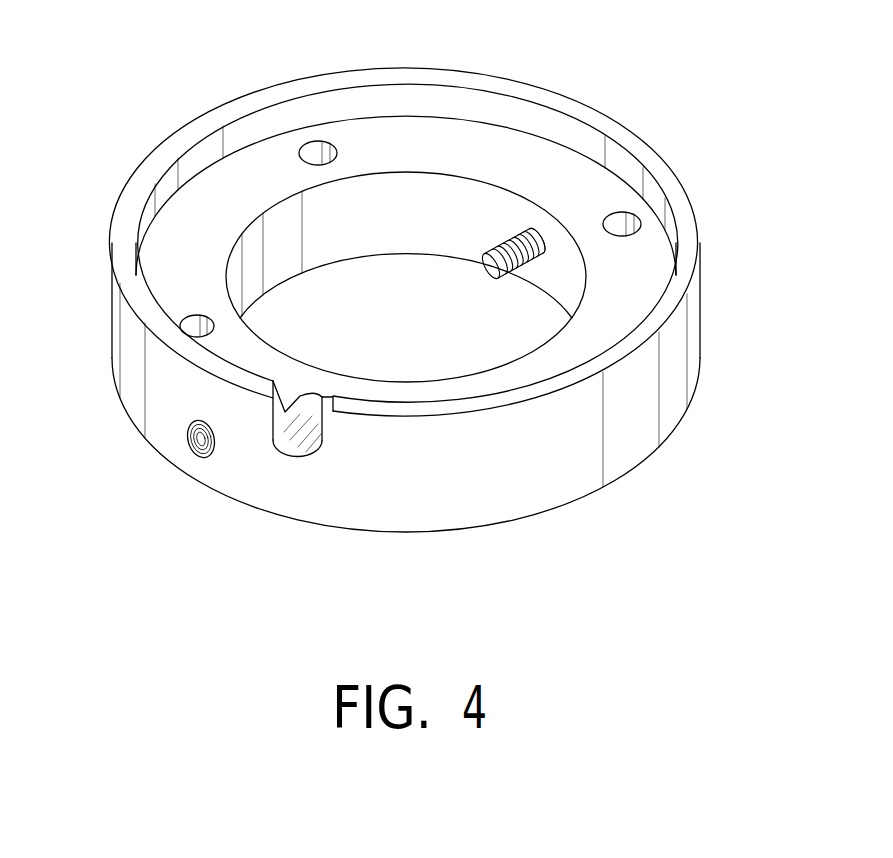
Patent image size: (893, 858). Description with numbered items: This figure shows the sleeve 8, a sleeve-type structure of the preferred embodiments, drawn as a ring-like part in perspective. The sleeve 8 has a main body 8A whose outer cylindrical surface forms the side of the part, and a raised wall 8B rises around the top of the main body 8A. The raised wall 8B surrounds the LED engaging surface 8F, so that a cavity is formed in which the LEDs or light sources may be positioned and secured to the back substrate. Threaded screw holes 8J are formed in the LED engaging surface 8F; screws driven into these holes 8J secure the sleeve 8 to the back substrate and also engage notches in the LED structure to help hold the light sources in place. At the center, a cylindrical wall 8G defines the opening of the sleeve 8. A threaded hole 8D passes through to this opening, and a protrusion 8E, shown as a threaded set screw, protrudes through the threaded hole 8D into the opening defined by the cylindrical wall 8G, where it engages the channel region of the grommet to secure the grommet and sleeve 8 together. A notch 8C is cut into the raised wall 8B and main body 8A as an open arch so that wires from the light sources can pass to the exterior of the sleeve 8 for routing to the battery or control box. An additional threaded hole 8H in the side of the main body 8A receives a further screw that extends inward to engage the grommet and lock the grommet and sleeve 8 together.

The sleeve 8 is at (104, 56).
The main body 8A is at (692, 322).
The raised wall 8B is at (683, 212).
The notch 8C is at (293, 432).
The threaded hole 8D is at (549, 248).
The protrusion 8E is at (500, 232).
The LED engaging surface 8F is at (347, 137).
The cylindrical wall 8G is at (403, 203).
The threaded hole 8H is at (194, 451).
The threaded screw holes 8J is at (616, 212).